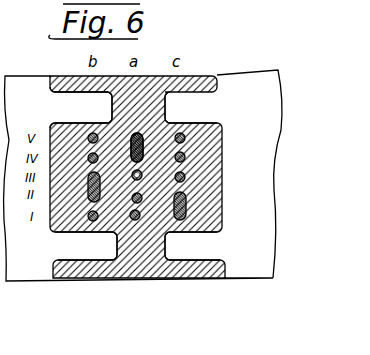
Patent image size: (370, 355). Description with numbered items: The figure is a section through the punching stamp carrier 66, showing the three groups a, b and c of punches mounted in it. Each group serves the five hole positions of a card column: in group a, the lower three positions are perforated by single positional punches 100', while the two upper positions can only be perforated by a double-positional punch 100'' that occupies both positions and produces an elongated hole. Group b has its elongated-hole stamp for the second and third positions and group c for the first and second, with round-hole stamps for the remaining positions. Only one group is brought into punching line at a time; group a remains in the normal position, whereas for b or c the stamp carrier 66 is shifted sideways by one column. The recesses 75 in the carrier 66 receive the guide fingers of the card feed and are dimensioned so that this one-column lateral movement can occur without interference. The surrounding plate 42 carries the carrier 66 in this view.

The plate 42 is at (262, 168).
The punching stamp carrier 66 is at (215, 210).
The recesses 75 is at (190, 108).
The single positional punches 100' is at (115, 252).
The double-positional punches 100'' is at (217, 148).